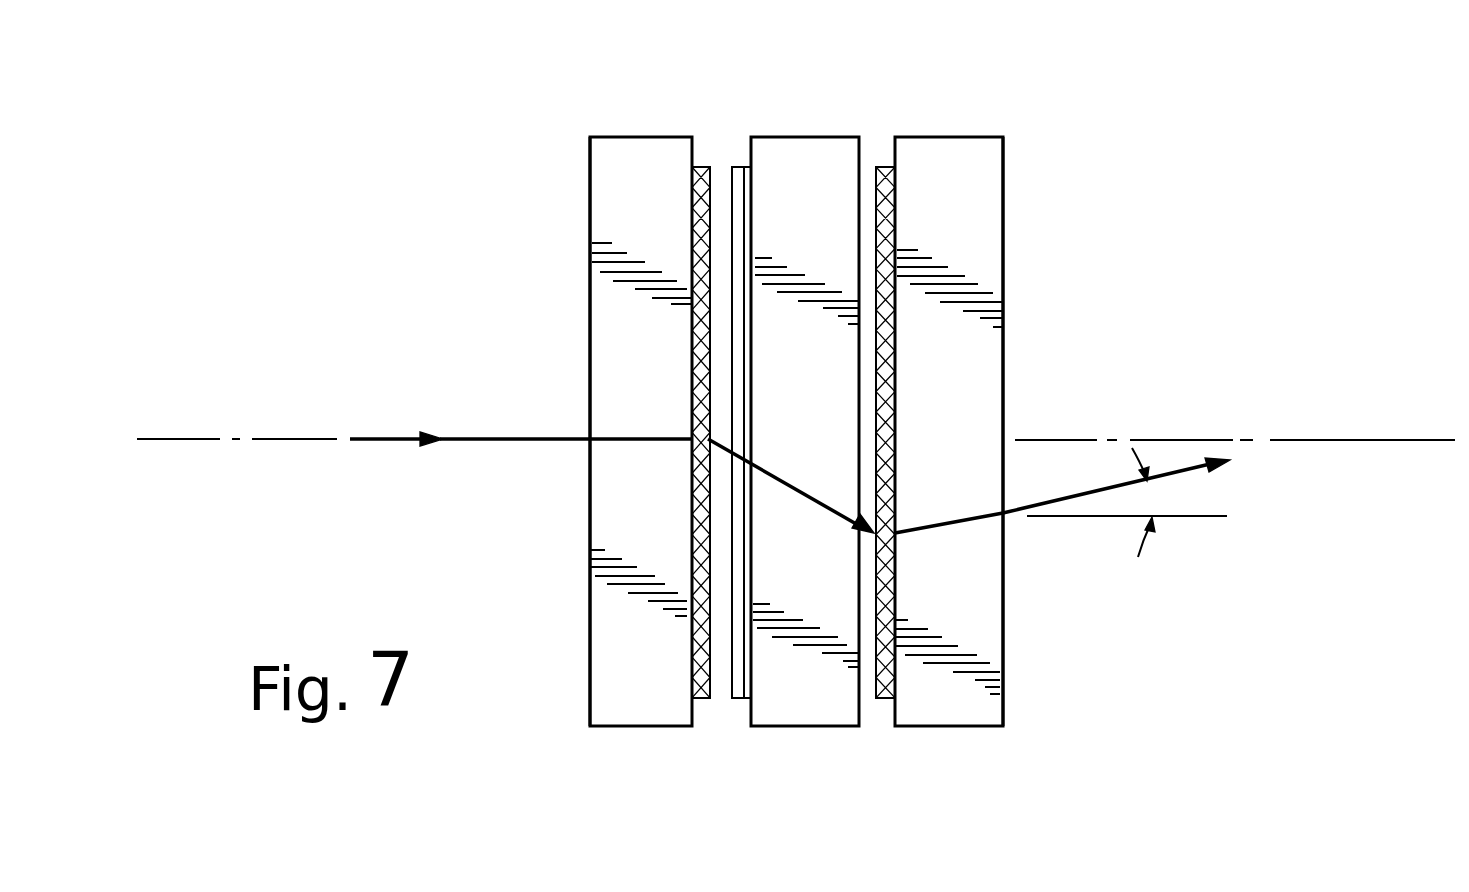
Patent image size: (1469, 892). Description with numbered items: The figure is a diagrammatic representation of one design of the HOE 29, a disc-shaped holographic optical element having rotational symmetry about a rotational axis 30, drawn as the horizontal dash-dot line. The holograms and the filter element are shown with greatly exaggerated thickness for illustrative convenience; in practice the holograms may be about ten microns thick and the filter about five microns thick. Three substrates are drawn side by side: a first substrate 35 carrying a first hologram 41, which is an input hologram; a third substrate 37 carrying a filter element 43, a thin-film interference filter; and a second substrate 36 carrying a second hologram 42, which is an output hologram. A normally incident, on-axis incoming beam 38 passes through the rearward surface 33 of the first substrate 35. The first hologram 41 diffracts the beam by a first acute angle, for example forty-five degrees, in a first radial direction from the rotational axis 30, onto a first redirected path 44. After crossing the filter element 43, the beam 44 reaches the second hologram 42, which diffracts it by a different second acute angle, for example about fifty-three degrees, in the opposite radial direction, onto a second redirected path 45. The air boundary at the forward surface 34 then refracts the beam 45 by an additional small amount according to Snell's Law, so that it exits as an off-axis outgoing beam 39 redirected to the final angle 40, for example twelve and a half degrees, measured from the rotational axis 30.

The HOE 29 is at (899, 424).
The rotational axis 30 is at (262, 439).
The rearward surface 33 is at (590, 223).
The forward surface 34 is at (1003, 288).
The first substrate 35 is at (617, 137).
The second substrate 36 is at (963, 137).
The third substrate 37 is at (781, 137).
The incoming beam 38 is at (385, 440).
The outgoing beam 39 is at (1227, 467).
The angle 40 is at (1152, 498).
The first hologram 41 is at (701, 700).
The second hologram 42 is at (884, 700).
The filter element 43 is at (738, 700).
The first redirected path 44 is at (805, 497).
The second redirected path 45 is at (950, 534).